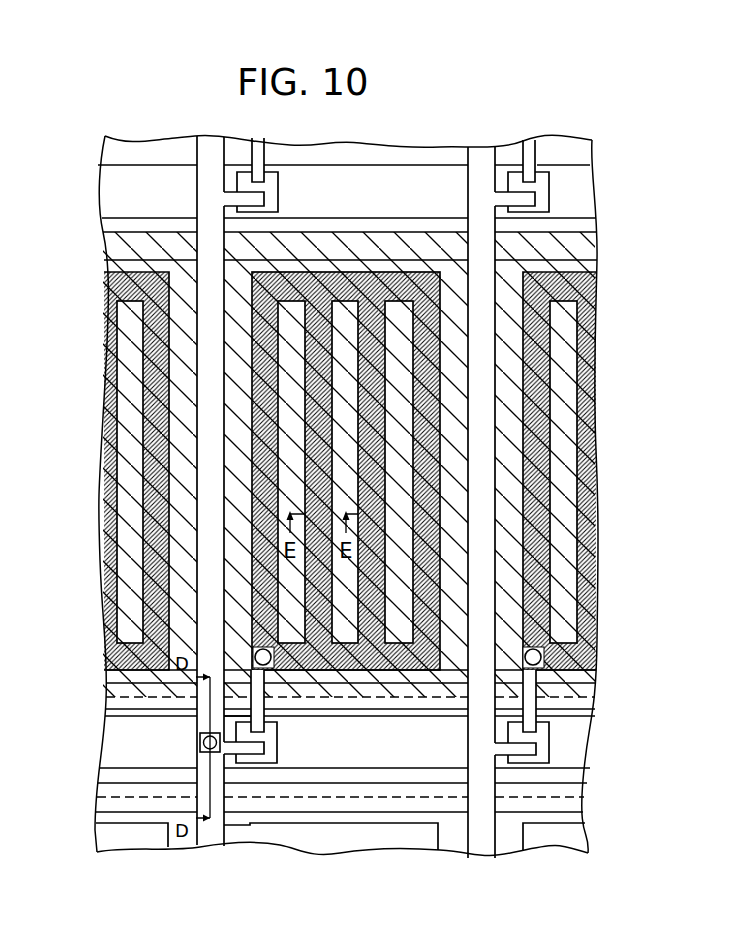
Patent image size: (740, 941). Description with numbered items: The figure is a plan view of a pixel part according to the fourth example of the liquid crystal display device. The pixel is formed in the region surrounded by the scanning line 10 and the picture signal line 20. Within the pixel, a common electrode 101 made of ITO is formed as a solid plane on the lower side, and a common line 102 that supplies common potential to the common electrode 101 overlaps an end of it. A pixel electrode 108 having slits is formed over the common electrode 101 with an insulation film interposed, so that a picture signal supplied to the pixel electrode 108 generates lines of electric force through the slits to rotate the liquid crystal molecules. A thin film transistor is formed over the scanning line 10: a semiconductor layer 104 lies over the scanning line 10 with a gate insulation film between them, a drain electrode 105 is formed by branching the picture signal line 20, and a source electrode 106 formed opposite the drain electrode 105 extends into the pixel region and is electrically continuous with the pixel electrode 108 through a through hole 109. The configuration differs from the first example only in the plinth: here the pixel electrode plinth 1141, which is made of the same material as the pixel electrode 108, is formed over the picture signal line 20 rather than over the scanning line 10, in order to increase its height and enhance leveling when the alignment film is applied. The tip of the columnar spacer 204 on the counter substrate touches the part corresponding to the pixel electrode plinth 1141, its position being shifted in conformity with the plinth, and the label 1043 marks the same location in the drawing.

The picture signal line 20 is at (207, 507).
The pixel electrode 108 is at (156, 552).
The through hole 109 is at (258, 651).
The common electrode 101 is at (125, 675).
The common line 102 is at (122, 703).
The scanning line 10 is at (122, 735).
The pixel electrode plinth 1141 is at (197, 740).
The columnar spacer 204 is at (195, 749).
The drain electrode 105 is at (250, 752).
The source electrode 106 is at (264, 729).
The semiconductor layer 104 is at (278, 754).
The gate electrode extension 1043 is at (367, 730).